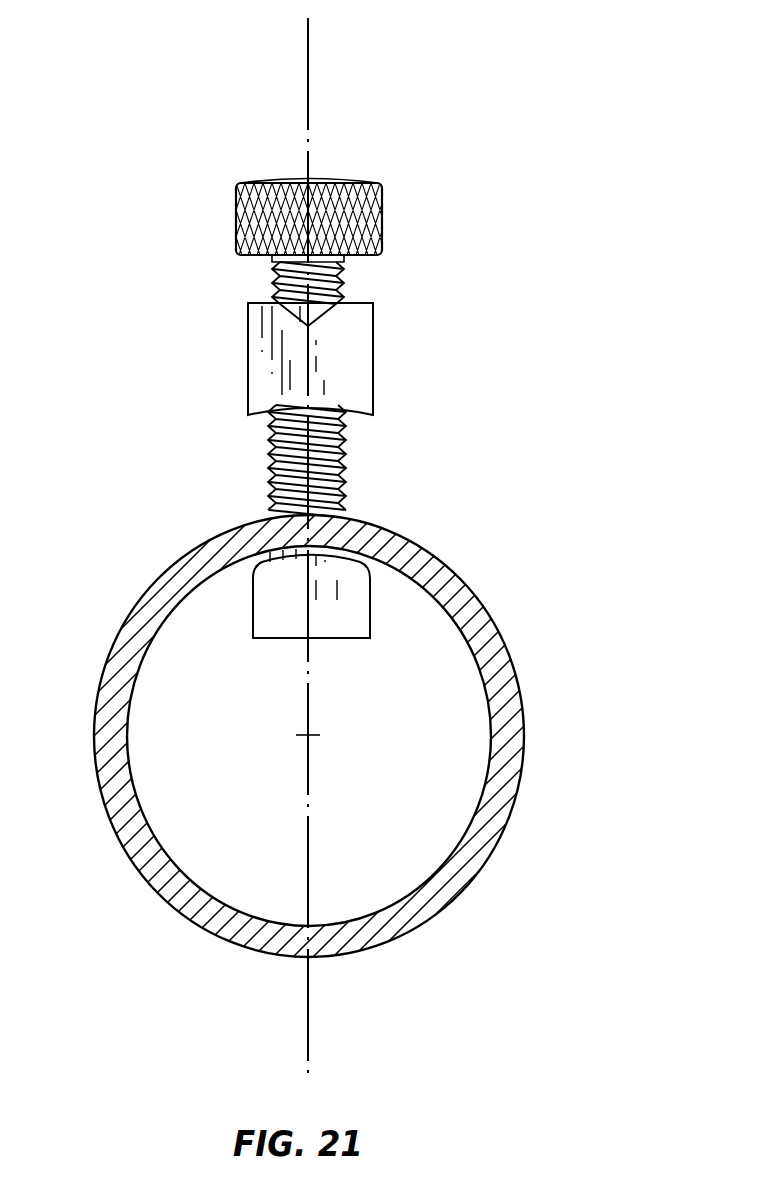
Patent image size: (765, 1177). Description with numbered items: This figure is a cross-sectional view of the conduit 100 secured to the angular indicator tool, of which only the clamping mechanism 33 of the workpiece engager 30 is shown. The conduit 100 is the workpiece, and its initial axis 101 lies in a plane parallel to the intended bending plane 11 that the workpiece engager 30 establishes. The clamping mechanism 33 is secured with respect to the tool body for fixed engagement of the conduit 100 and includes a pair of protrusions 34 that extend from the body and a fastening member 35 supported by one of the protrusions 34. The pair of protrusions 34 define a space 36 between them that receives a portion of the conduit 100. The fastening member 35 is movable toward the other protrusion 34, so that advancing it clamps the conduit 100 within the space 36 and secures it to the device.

The intended bending plane 11 is at (307, 75).
The clamping mechanism 33 is at (134, 280).
The fastening member 35 is at (380, 213).
The workpiece engager 30 is at (362, 353).
The protrusions 34 is at (263, 612).
The space 36 is at (377, 468).
The conduit 100 is at (517, 711).
The initial axis 101 is at (312, 733).